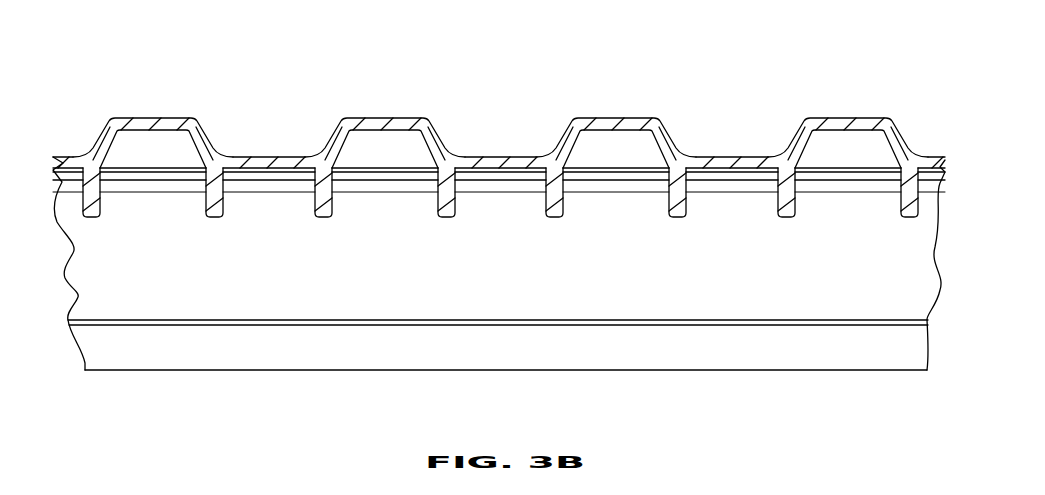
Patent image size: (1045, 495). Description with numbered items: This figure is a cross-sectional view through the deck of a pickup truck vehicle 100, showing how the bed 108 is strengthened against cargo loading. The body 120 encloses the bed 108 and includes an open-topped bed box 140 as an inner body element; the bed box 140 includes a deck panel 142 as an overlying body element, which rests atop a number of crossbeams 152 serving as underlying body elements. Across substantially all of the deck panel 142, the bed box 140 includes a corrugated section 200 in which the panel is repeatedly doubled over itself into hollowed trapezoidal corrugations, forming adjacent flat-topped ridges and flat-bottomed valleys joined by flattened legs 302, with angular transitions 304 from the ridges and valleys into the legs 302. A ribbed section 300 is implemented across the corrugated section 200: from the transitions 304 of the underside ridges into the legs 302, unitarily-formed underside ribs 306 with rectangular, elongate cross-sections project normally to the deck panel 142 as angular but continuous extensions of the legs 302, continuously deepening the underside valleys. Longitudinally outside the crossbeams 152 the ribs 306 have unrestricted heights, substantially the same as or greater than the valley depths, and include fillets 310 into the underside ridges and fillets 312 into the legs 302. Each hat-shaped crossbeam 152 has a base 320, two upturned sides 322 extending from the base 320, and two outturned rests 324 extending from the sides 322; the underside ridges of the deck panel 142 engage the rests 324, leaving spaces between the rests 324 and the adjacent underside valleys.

The vehicle 100 is at (93, 137).
The bed 108 is at (167, 112).
The body 120 is at (242, 153).
The bed box 140 is at (335, 127).
The deck panel 142 is at (613, 118).
The corrugated section 200 is at (643, 118).
The legs 302 is at (674, 134).
The transitions 304 is at (690, 153).
The ribbed section 300 is at (738, 172).
The fillets 310 is at (690, 173).
The ribs 306 is at (683, 213).
The fillets 312 is at (667, 160).
The rests 324 is at (832, 193).
The sides 322 is at (892, 278).
The crossbeams 152 is at (735, 370).
The base 320 is at (847, 370).